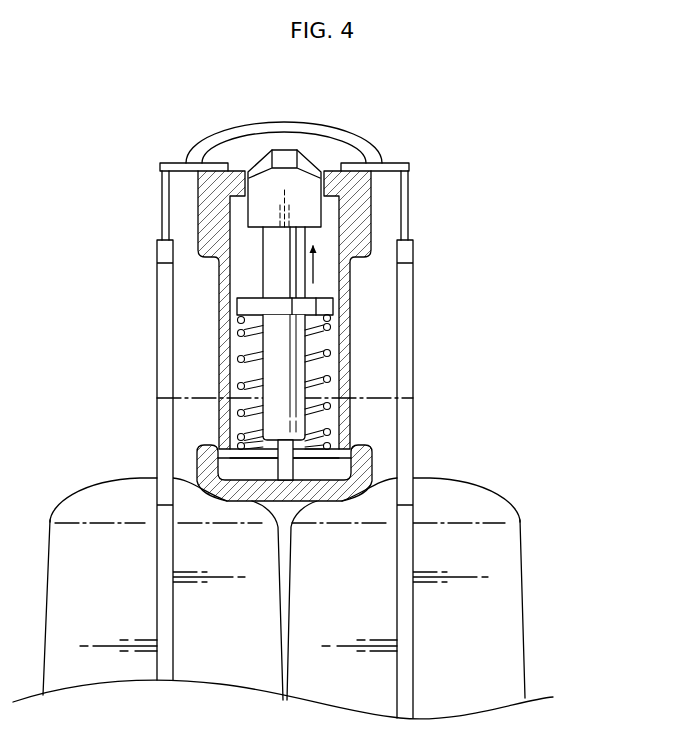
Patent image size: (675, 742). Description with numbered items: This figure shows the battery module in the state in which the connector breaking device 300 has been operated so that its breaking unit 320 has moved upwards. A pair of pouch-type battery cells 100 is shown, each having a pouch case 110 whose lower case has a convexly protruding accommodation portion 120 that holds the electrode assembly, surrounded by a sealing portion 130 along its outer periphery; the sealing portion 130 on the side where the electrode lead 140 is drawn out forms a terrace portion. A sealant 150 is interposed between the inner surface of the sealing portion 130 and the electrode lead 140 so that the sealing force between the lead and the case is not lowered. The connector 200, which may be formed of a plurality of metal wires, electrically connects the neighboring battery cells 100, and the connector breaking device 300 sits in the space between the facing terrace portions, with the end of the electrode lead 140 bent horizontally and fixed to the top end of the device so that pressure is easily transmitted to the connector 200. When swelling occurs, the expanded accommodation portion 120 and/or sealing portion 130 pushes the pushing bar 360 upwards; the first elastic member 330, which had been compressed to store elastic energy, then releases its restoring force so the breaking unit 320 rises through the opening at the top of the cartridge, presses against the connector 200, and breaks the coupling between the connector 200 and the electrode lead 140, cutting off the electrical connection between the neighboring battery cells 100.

The battery cell 100 is at (321, 445).
The pouch case 110 is at (336, 572).
The accommodation portion 120 is at (522, 573).
The sealing portion 130 is at (413, 463).
The electrode lead 140 is at (413, 185).
The sealant 150 is at (413, 250).
The connector 200 is at (282, 121).
The connector breaking device 300 is at (247, 295).
The breaking unit 320 is at (270, 182).
The first elastic member 330 is at (237, 359).
The pushing bar 360 is at (209, 472).